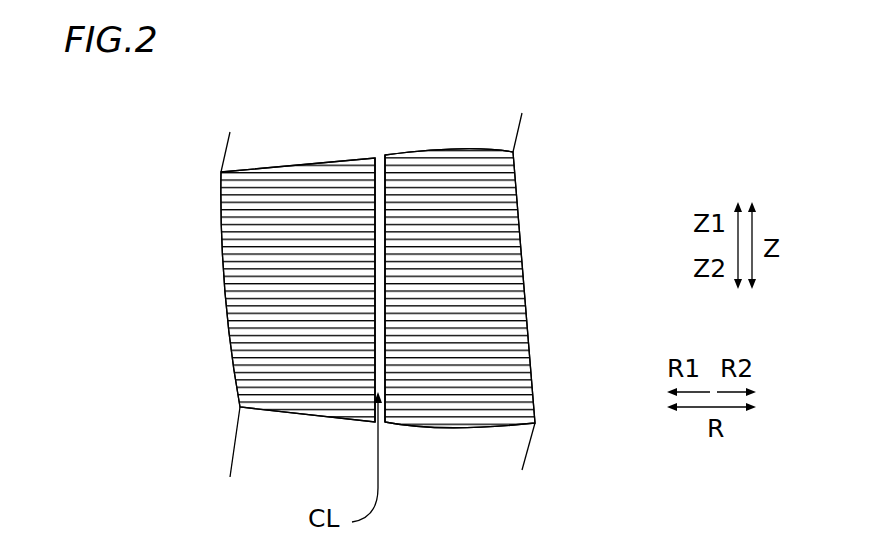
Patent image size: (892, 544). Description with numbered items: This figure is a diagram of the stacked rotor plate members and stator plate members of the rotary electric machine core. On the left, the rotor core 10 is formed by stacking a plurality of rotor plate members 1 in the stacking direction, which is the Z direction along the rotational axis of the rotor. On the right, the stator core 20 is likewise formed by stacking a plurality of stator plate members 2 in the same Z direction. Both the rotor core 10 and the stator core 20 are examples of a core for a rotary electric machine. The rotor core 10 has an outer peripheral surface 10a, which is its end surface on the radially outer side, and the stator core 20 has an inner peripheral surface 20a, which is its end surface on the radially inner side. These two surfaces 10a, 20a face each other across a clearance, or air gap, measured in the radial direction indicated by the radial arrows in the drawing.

The rotor plate member 1 is at (218, 203).
The stator plate member 2 is at (518, 200).
The rotor core 10 is at (207, 276).
The stator core 20 is at (547, 282).
The outer peripheral surface 10a is at (375, 157).
The inner peripheral surface 20a is at (383, 157).